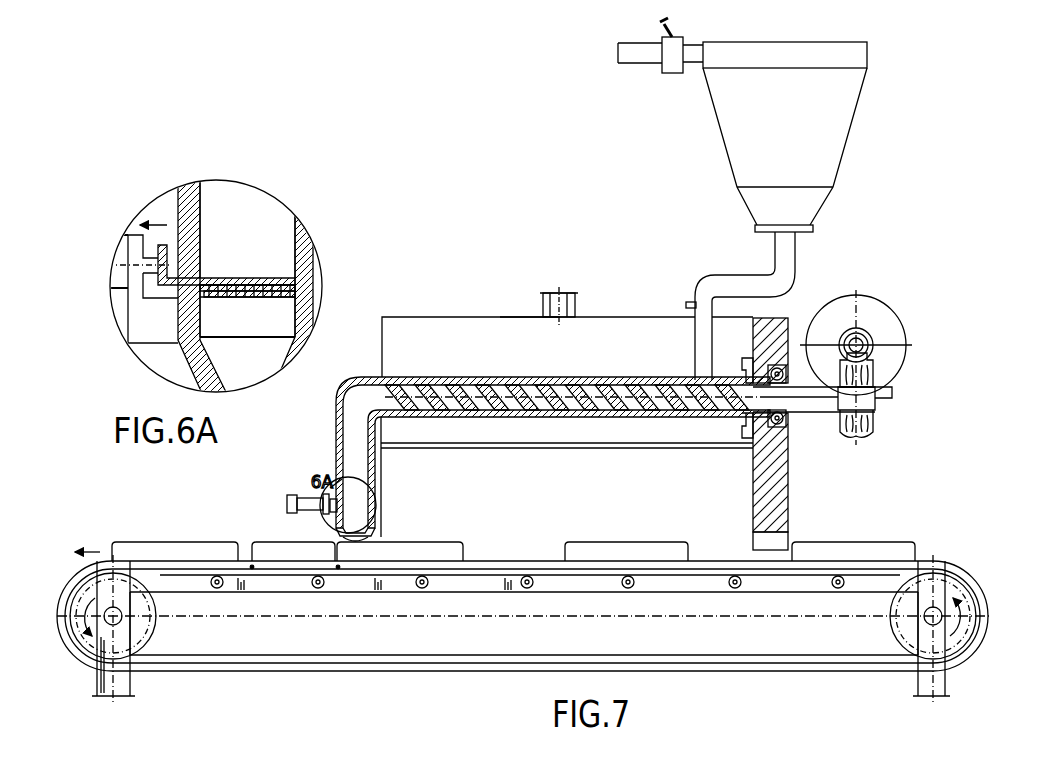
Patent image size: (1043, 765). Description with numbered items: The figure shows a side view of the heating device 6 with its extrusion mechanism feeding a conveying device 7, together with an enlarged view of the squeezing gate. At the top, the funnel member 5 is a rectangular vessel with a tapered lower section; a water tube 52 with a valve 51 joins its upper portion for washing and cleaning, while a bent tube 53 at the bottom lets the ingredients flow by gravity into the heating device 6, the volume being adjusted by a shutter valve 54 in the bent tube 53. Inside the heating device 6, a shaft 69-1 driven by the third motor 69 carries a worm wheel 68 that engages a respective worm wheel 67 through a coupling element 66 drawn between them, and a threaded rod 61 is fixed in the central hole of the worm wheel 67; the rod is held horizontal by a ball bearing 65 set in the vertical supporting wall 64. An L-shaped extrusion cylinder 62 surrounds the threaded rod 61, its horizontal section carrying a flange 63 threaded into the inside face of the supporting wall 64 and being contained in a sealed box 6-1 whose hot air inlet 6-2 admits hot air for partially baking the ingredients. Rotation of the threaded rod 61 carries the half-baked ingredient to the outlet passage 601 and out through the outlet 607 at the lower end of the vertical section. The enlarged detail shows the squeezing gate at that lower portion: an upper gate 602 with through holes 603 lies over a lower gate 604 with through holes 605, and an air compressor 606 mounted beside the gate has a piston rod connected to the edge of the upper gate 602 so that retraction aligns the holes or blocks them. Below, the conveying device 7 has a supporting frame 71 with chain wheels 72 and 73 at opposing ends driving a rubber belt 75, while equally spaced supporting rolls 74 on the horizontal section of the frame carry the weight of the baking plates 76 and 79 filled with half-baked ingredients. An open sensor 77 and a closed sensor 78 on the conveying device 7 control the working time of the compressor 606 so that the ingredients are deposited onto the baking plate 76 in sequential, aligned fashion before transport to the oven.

In FIG. 7, the funnel member 5 is at (833, 132).
In FIG. 7, the valve 51 is at (673, 62).
In FIG. 7, the water tube 52 is at (642, 63).
In FIG. 7, the bent tube 53 is at (785, 276).
In FIG. 7, the shutter valve 54 is at (686, 304).
In FIG. 7, the heating device 6 is at (478, 314).
In FIG. 7, the sealed box 6-1 is at (528, 315).
In FIG. 7, the hot air inlet 6-2 is at (562, 298).
In FIG. 7, the threaded rod 61 is at (525, 397).
In FIG. 7, the L-shaped extrusion cylinder 62 is at (550, 378).
In FIG. 7, the flange 63 is at (752, 360).
In FIG. 7, the vertical supporting wall 64 is at (778, 481).
In FIG. 7, the ball bearing 65 is at (786, 424).
In FIG. 7, the coupling 66 is at (870, 402).
In FIG. 7, the worm wheel 67 is at (868, 438).
In FIG. 7, the worm wheel 68 is at (873, 342).
In FIG. 7, the third motor 69 is at (896, 362).
In FIG. 7, the shaft 69-1 is at (868, 337).
In FIG. 6A, the outlet passage 601 is at (270, 212).
In FIG. 6A, the upper gate 602 is at (160, 245).
In FIG. 6A, the through holes 603 is at (222, 282).
In FIG. 6A, the lower gate 604 is at (263, 295).
In FIG. 6A, the through holes 605 is at (248, 297).
In FIG. 6A, the air compressor 606 is at (128, 258).
In FIG. 7, the air compressor 606 is at (312, 504).
In FIG. 6A, the outlet 607 is at (246, 393).
In FIG. 7, the outlet 607 is at (370, 533).
In FIG. 7, the conveying device 7 is at (995, 622).
In FIG. 7, the supporting frame 71 is at (940, 682).
In FIG. 7, the chain wheel 72 is at (967, 598).
In FIG. 7, the chain wheel 73 is at (138, 637).
In FIG. 7, the supporting roll 74 is at (872, 570).
In FIG. 7, the rubber belt 75 is at (940, 562).
In FIG. 7, the baking plate 76 is at (661, 549).
In FIG. 7, the open sensor 77 is at (338, 567).
In FIG. 7, the closed sensor 78 is at (252, 567).
In FIG. 7, the baking plate 79 is at (165, 547).